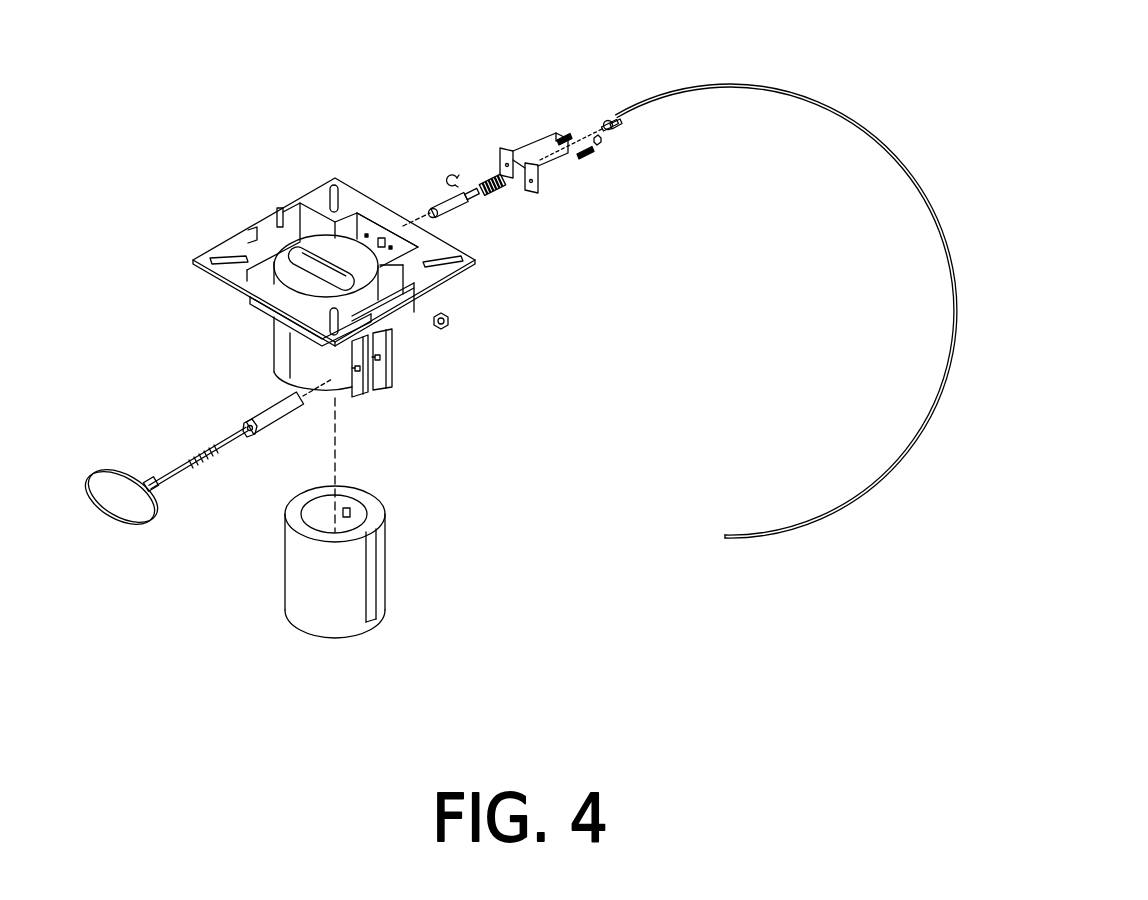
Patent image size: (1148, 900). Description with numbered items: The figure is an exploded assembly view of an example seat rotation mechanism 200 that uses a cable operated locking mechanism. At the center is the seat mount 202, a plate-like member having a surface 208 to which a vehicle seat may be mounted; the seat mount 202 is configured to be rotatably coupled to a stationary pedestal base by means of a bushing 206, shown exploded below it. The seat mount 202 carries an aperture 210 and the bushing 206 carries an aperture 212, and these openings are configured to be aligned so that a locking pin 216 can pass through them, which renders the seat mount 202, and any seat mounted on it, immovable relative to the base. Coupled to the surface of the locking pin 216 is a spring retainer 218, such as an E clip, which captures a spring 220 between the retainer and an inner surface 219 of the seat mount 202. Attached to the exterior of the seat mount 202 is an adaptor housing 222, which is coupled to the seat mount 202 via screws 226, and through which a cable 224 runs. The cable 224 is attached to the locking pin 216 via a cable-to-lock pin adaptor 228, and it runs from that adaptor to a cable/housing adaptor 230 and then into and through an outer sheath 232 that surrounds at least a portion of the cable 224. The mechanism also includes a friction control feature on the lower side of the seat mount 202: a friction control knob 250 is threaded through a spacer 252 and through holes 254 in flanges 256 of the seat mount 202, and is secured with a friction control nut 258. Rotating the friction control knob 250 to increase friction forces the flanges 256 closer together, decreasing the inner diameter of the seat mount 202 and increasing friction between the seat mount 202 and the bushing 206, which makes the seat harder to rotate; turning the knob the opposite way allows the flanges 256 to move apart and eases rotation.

The seat rotation mechanism 200 is at (178, 102).
The seat mount 202 is at (219, 246).
The bushing 206 is at (318, 608).
The surface 208 is at (318, 192).
The aperture 210 is at (383, 237).
The aperture 212 is at (350, 506).
The locking pin 216 is at (455, 213).
The spring retainer 218 is at (448, 176).
The inner surface 219 is at (362, 217).
The spring 220 is at (490, 177).
The adaptor housing 222 is at (531, 140).
The cable 224 is at (590, 129).
The screws 226 is at (564, 146).
The cable-to-lock pin adaptor 228 is at (600, 140).
The cable/housing adaptor 230 is at (610, 118).
The outer sheath 232 is at (735, 85).
The friction control knob 250 is at (127, 510).
The spacer 252 is at (261, 411).
The holes 254 is at (378, 362).
The flanges 256 is at (378, 393).
The friction control nut 258 is at (452, 321).